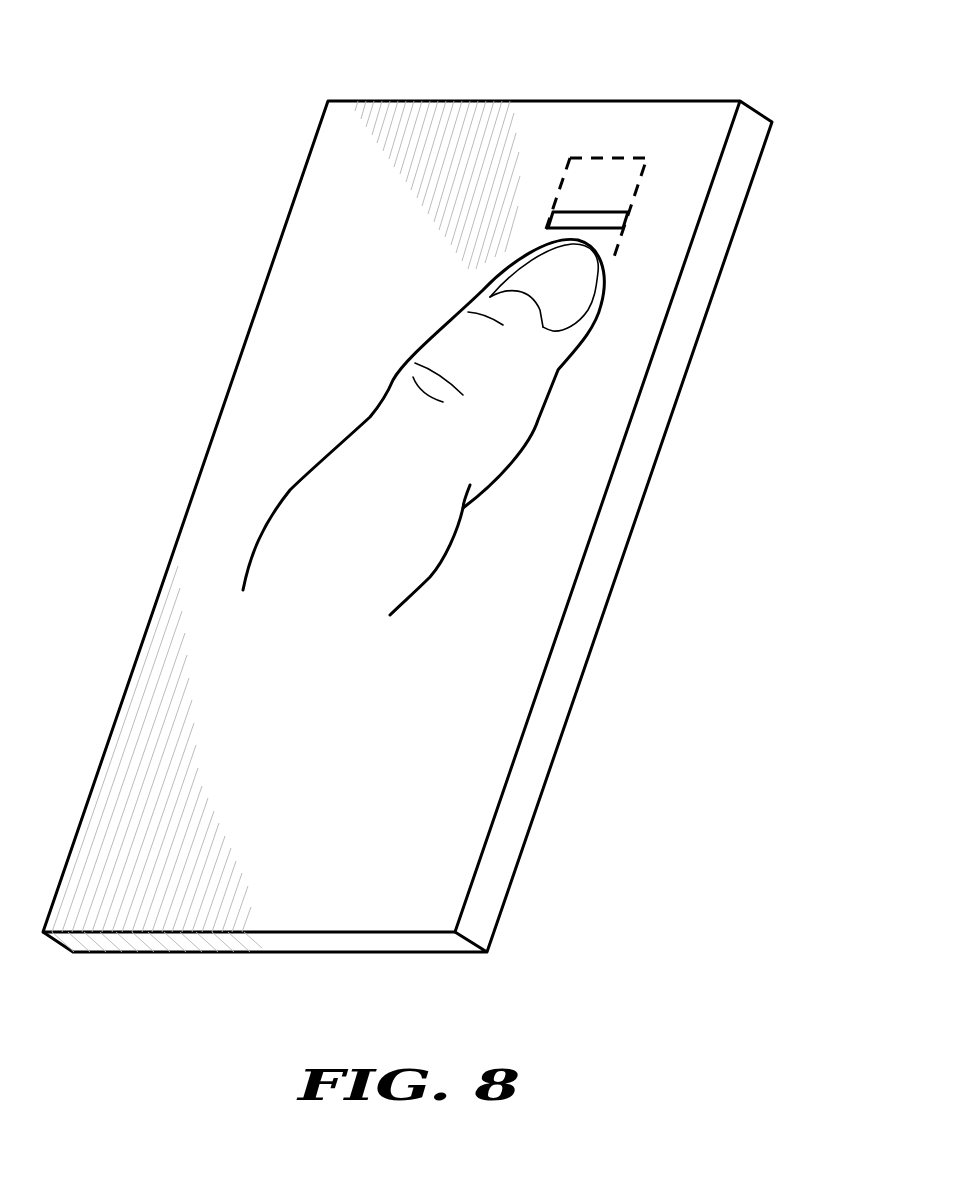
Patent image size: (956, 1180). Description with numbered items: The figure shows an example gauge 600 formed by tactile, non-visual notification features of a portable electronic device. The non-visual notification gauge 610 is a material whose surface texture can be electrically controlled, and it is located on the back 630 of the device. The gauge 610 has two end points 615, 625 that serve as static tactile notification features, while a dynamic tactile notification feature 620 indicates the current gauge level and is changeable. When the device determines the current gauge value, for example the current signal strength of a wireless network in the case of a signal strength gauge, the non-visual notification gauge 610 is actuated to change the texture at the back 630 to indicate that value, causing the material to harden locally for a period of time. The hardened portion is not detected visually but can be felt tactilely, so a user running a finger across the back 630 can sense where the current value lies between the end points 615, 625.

The gauge 600 is at (407, 526).
The non-visual notification gauge 610 is at (671, 212).
The end point 615 is at (607, 157).
The dynamic tactile notification feature 620 is at (613, 222).
The end point 625 is at (591, 339).
The back 630 is at (310, 288).